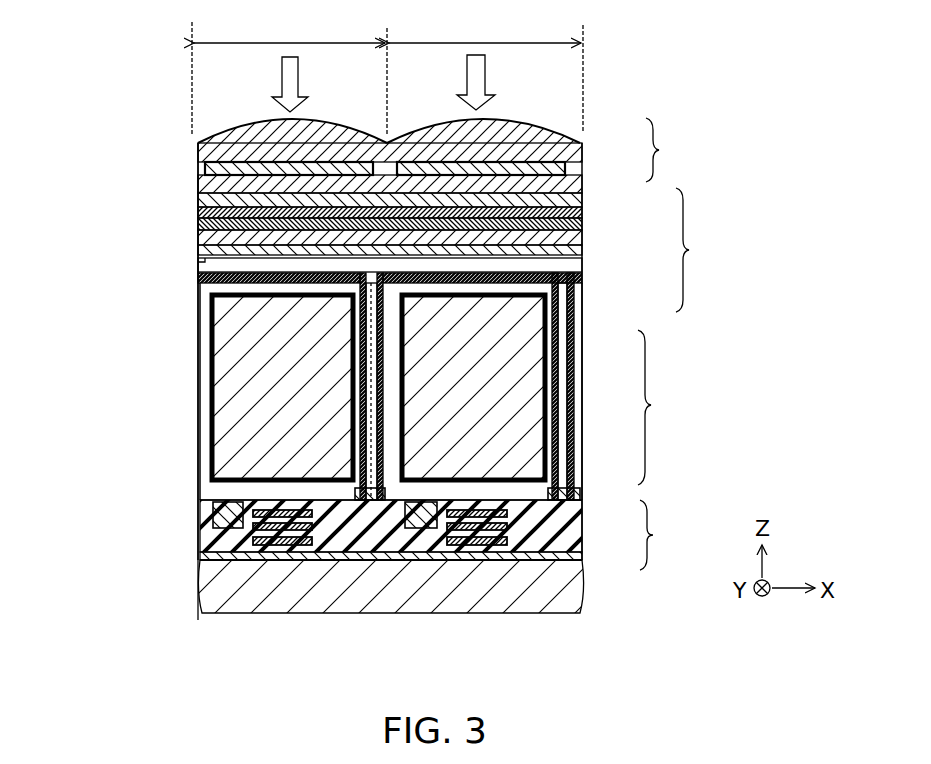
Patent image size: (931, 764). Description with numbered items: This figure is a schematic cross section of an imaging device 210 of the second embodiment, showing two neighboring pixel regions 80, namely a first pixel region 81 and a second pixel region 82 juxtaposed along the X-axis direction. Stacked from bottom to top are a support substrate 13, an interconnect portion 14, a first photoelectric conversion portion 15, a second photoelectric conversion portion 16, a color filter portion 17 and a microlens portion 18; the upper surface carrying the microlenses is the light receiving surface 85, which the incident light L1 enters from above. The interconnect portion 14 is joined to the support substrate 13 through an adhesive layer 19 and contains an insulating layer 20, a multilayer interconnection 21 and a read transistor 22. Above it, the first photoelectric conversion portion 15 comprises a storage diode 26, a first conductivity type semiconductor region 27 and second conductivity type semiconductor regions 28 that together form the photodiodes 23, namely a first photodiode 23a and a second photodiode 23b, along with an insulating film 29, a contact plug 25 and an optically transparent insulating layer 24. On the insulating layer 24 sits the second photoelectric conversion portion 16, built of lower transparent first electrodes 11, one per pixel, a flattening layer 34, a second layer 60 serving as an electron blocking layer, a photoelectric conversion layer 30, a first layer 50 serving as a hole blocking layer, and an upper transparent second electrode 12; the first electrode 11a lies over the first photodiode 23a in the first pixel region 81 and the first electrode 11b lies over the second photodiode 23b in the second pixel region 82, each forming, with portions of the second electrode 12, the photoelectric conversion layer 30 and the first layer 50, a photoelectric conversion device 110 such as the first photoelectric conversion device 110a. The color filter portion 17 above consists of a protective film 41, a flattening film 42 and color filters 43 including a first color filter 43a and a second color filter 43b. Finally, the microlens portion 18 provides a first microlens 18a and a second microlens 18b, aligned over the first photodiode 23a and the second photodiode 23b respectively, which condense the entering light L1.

The imaging device 210 is at (720, 118).
The photoelectric conversion device 110 is at (720, 222).
The first photoelectric conversion device 110a is at (175, 253).
The support substrate 13 is at (565, 592).
The adhesive layer 19 is at (562, 566).
The interconnect portion 14 is at (443, 534).
The insulating layer 20 is at (565, 556).
The multilayer interconnection 21 is at (510, 530).
The read transistor 22 is at (480, 512).
The photodiode 23 is at (433, 582).
The first photodiode 23a is at (320, 490).
The second photodiode 23b is at (392, 490).
The first photoelectric conversion portion 15 is at (440, 386).
The optically transparent insulating layer 24 is at (440, 283).
The contact plug 25 is at (556, 432).
The storage diode 26 is at (575, 497).
The first conductivity type semiconductor region 27 is at (505, 385).
The second conductivity type semiconductor region 28 is at (372, 392).
The insulating film 29 is at (571, 457).
The second photoelectric conversion portion 16 is at (419, 258).
The first electrode 11 is at (585, 266).
The first electrode 11a is at (200, 262).
The first electrode 11b is at (470, 278).
The flattening layer 34 is at (585, 251).
The second layer 60 is at (585, 239).
The photoelectric conversion layer 30 is at (585, 225).
The first layer 50 is at (585, 213).
The second electrode 12 is at (585, 201).
The color filter portion 17 is at (405, 135).
The protective film 41 is at (585, 186).
The flattening film 42 is at (585, 147).
The color filter 43 is at (383, 126).
The first color filter 43a is at (205, 170).
The second color filter 43b is at (425, 165).
The microlens portion 18 is at (390, 100).
The first microlens 18a is at (225, 128).
The second microlens 18b is at (535, 130).
The light receiving surface 85 is at (240, 125).
The pixel region 80 is at (408, 26).
The first pixel region 81 is at (289, 74).
The second pixel region 82 is at (486, 72).
The light L1 is at (485, 76).